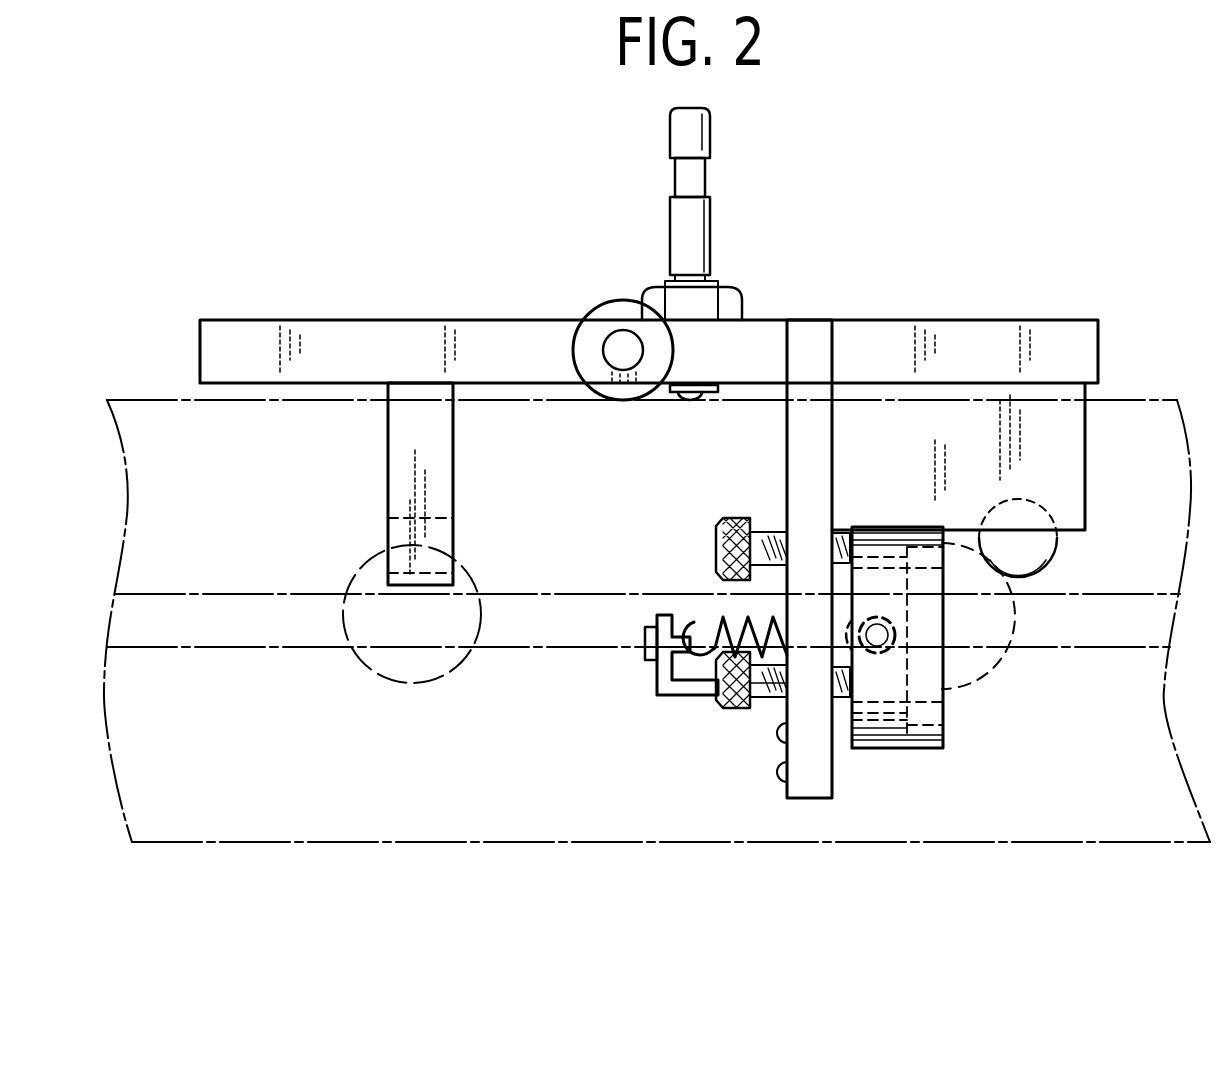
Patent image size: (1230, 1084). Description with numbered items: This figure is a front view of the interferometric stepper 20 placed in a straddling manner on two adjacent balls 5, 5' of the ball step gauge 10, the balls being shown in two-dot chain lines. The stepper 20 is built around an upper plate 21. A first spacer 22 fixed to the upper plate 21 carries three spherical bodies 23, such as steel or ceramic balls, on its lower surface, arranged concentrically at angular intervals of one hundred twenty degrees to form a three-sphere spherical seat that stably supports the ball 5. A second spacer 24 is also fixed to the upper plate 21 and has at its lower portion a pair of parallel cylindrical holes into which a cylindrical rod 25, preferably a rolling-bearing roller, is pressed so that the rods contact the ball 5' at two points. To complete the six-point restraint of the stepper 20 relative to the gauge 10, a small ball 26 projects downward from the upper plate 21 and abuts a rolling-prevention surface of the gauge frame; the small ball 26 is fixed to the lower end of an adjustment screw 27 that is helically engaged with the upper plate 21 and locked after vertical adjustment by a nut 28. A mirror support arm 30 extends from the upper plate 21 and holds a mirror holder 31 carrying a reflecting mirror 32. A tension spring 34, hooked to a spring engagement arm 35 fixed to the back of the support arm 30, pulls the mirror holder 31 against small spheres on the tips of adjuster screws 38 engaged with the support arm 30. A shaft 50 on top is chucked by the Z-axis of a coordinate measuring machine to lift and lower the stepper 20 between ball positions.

The ball step gauge 10 is at (1137, 412).
The interferometric stepper 20 is at (846, 230).
The upper plate 21 is at (942, 337).
The first spacer 22 is at (985, 420).
The spherical bodies 23 is at (1032, 562).
The second spacer 24 is at (405, 458).
The cylindrical rod 25 is at (440, 535).
The small ball 26 is at (690, 397).
The adjustment screw 27 is at (693, 380).
The nut 28 is at (680, 306).
The mirror support arm 30 is at (818, 450).
The mirror holder 31 is at (897, 738).
The reflecting mirror 32 is at (943, 710).
The tension spring 34 is at (712, 630).
The spring engagement arm 35 is at (683, 695).
The adjuster screw 38 is at (740, 516).
The shaft 50 is at (697, 227).
The ball 5 is at (942, 627).
The ball 5' is at (412, 653).